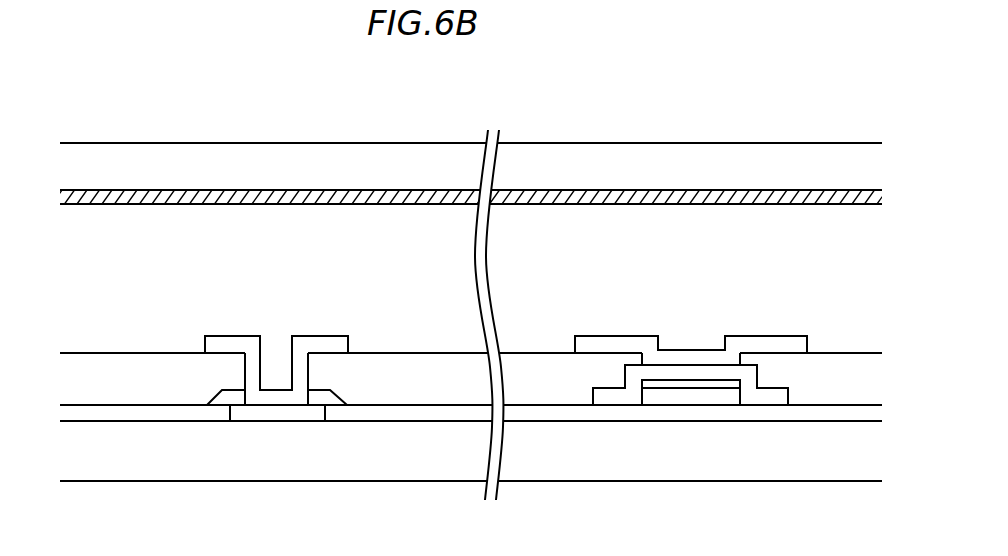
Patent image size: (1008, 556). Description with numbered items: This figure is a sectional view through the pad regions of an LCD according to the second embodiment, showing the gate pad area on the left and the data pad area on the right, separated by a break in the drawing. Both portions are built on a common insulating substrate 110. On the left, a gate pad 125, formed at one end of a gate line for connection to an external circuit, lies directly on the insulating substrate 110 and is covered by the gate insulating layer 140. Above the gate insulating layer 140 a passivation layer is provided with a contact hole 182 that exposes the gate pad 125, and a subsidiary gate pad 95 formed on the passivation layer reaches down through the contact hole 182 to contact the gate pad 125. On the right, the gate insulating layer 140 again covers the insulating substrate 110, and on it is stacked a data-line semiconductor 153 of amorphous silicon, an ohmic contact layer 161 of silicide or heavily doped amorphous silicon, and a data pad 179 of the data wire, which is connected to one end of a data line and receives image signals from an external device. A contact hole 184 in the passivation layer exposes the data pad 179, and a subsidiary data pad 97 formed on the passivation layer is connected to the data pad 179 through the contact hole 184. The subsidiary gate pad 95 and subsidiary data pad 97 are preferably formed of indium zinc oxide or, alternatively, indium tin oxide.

The subsidiary gate pad 95 is at (240, 340).
The subsidiary data pad 97 is at (648, 337).
The insulating substrate 110 is at (365, 460).
The gate pad 125 is at (278, 412).
The gate insulating layer 140 is at (452, 412).
The data-line semiconductor 153 is at (675, 397).
The ohmic contact layer 161 is at (728, 385).
The data pad 179 is at (610, 397).
The contact hole 182 is at (283, 333).
The contact hole 184 is at (695, 333).